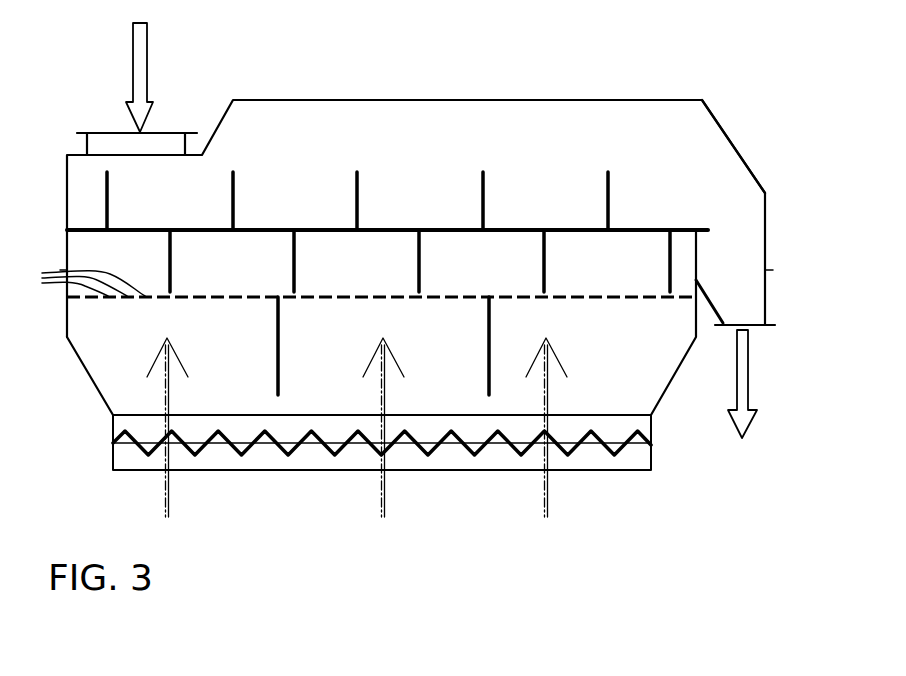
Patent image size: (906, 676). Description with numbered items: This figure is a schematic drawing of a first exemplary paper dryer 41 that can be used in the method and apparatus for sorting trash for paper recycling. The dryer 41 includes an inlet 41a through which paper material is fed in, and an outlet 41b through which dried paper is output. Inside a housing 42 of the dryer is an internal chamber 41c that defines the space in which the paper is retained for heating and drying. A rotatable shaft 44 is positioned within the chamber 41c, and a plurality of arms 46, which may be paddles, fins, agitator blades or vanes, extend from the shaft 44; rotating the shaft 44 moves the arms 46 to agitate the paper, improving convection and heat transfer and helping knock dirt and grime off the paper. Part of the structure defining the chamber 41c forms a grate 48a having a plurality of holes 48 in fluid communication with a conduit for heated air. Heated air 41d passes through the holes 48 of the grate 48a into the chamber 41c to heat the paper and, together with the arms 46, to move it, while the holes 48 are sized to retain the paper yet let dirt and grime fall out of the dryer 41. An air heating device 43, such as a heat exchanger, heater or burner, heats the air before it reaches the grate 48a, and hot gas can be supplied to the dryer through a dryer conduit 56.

The dryer 41 is at (715, 90).
The inlet 41a is at (147, 52).
The outlet 41b is at (749, 374).
The internal chamber 41c is at (312, 215).
The heated air 41d is at (549, 516).
The housing 42 is at (727, 135).
The air heating device 43 is at (652, 462).
The rotatable shaft 44 is at (400, 228).
The arms 46 is at (487, 176).
The holes 48 is at (82, 282).
The grate 48a is at (122, 306).
The dryer conduit 56 is at (279, 396).